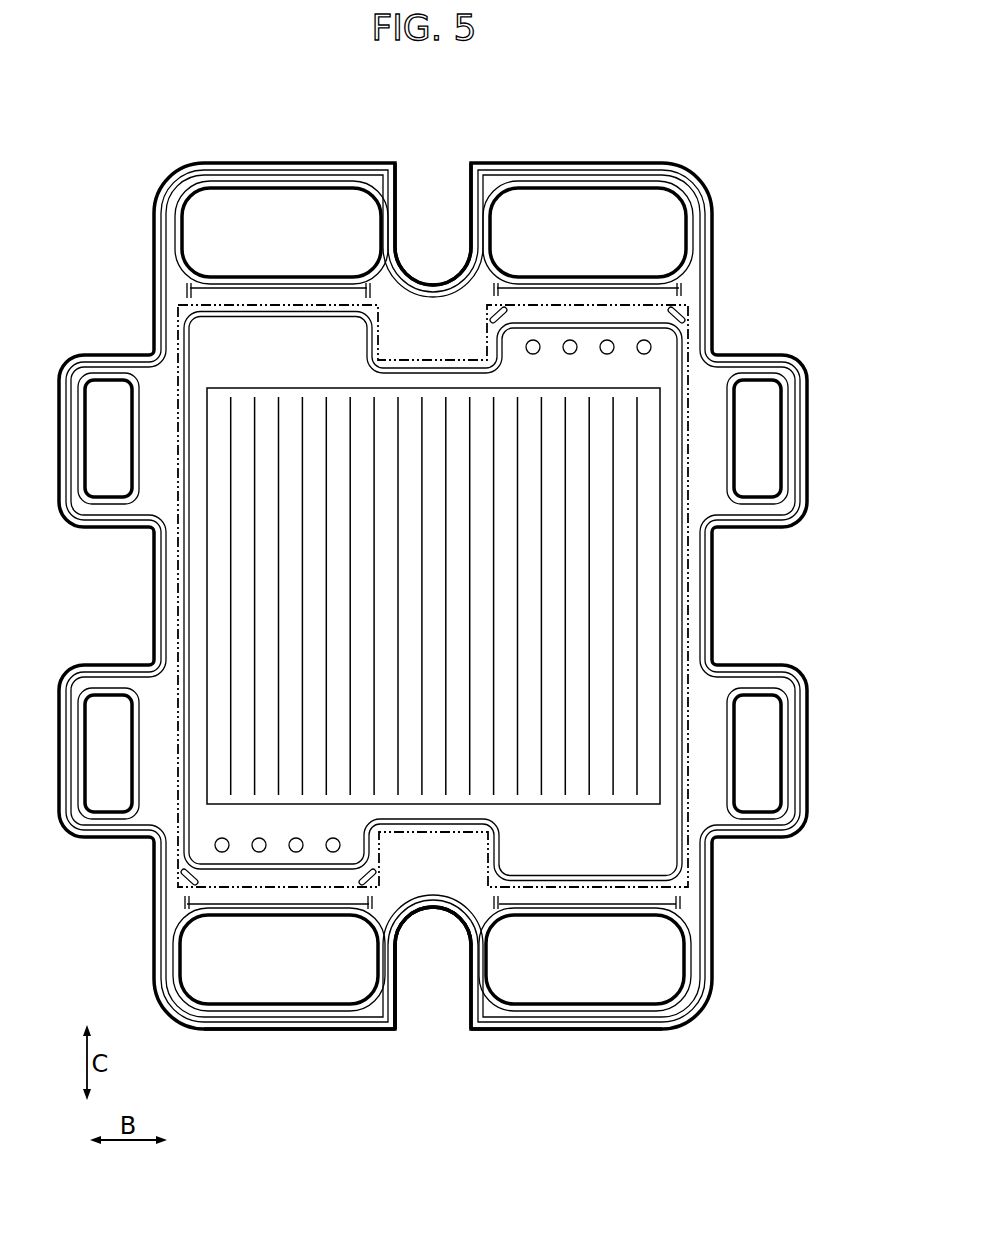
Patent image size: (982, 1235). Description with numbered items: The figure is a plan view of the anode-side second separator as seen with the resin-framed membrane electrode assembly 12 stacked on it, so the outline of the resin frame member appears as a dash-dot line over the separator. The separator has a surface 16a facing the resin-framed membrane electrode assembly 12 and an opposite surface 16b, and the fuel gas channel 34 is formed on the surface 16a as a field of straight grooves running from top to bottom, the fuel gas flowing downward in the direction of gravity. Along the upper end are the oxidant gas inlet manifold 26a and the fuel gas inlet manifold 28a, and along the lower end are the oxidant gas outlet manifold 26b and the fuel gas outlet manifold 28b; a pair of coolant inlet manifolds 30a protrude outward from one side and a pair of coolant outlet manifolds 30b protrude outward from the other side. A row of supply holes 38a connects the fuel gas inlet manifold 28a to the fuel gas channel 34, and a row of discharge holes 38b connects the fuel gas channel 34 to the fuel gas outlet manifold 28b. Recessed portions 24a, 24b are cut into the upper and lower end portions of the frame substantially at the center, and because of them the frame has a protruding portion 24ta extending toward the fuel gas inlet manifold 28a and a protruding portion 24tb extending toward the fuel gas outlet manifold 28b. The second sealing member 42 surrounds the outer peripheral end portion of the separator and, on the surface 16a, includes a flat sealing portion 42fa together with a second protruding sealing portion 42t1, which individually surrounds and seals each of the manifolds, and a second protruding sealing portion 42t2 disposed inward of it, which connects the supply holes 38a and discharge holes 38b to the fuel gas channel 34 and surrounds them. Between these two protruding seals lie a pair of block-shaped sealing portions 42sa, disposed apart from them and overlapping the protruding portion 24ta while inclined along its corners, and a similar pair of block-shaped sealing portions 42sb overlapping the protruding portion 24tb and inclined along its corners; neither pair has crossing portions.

The resin-framed membrane electrode assembly 12 is at (238, 296).
The surface of the second separator 16a is at (436, 1013).
The surface of the second separator 16b is at (452, 1012).
The recessed portion 24a is at (382, 313).
The recessed portion 24b is at (482, 880).
The protruding portion 24ta is at (587, 315).
The protruding portion 24tb is at (253, 877).
The oxidant gas inlet manifold 26a is at (300, 212).
The oxidant gas outlet manifold 26b is at (610, 993).
The fuel gas inlet manifold 28a is at (608, 213).
The fuel gas outlet manifold 28b is at (247, 995).
The coolant inlet manifolds 30a is at (110, 395).
The coolant outlet manifolds 30b is at (760, 490).
The fuel gas channel 34 is at (630, 598).
The supply holes 38a is at (651, 346).
The discharge holes 38b is at (216, 846).
The second sealing member 42 is at (397, 158).
The second protruding sealing portion 42t1 is at (489, 183).
The second protruding sealing portion 42t2 is at (548, 322).
The block-shaped sealing portions 42sa is at (684, 316).
The block-shaped sealing portions 42sb is at (188, 879).
The flat sealing portion 42fa is at (636, 298).